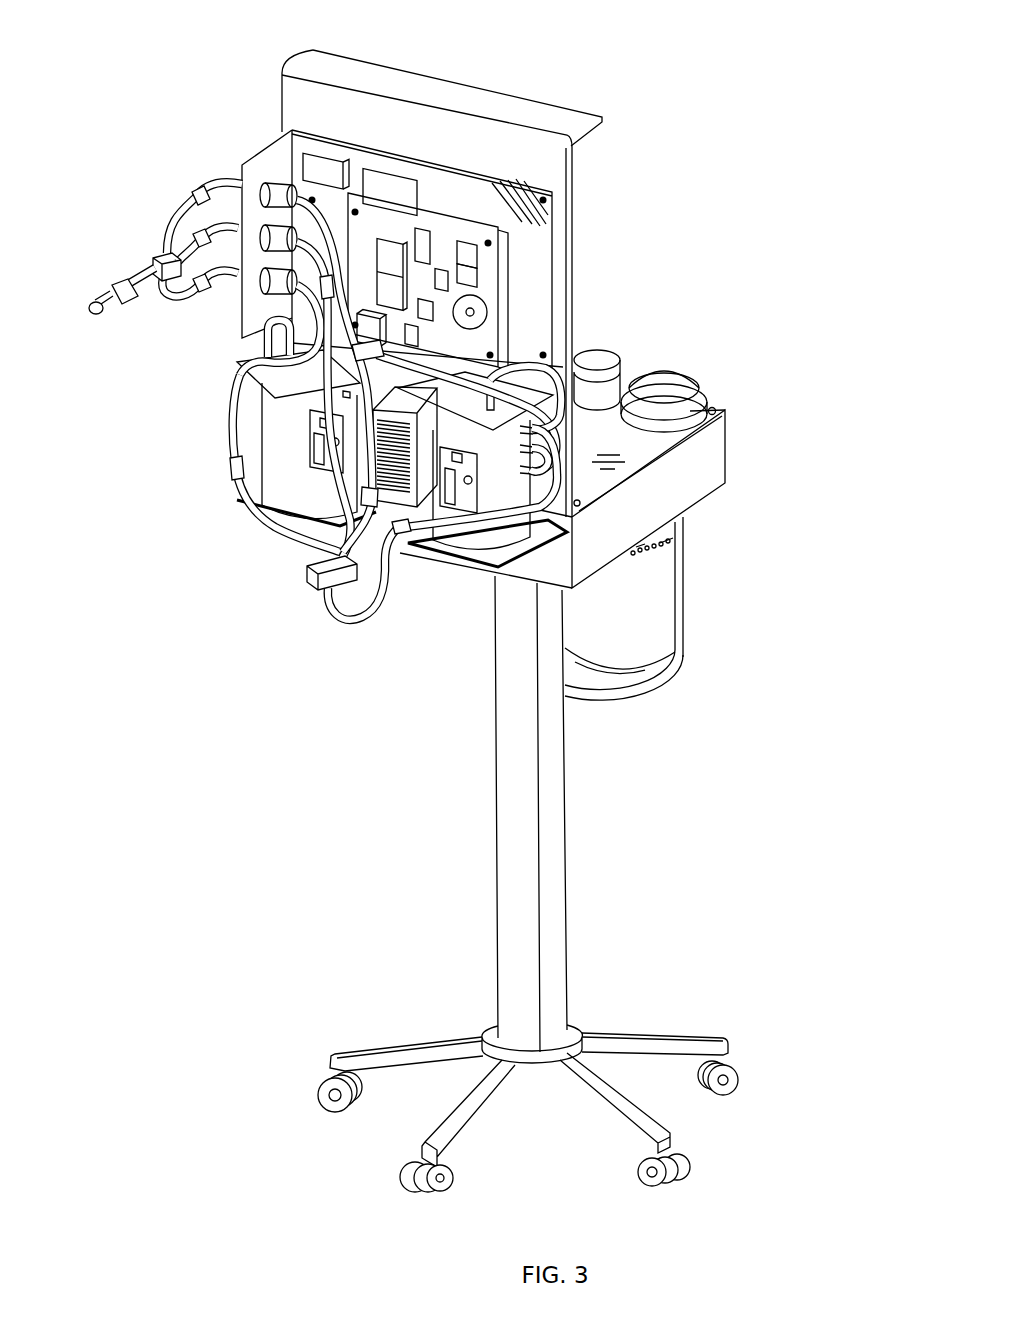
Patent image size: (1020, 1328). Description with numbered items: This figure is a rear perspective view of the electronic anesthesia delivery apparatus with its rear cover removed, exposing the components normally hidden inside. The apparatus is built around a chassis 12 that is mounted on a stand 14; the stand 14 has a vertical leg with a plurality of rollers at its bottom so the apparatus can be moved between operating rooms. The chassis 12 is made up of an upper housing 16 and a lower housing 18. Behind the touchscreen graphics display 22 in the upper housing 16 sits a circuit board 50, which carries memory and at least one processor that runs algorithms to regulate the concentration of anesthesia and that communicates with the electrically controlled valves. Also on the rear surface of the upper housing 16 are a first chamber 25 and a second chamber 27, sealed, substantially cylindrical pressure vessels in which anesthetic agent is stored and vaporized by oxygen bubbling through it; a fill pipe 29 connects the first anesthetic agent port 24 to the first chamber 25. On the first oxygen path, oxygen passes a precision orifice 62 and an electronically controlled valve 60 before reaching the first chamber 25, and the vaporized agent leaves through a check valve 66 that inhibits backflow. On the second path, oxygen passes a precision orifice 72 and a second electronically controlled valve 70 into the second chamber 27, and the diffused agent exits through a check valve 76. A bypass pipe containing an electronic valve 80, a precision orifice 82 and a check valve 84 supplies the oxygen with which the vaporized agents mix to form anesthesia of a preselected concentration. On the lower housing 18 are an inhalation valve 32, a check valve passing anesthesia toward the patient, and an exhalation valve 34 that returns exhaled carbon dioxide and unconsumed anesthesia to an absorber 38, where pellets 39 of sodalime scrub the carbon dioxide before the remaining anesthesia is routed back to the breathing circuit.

The chassis 12 is at (585, 90).
The stand 14 is at (566, 866).
The upper housing 16 is at (295, 110).
The lower housing 18 is at (655, 495).
The touchscreen graphics display 22 is at (540, 275).
The first anesthetic agent port 24 is at (583, 407).
The first chamber 25 is at (460, 540).
The second chamber 27 is at (293, 493).
The fill pipe 29 is at (537, 517).
The inhalation valve 32 is at (700, 386).
The exhalation valve 34 is at (603, 358).
The absorber 38 is at (687, 625).
The pellets 39 is at (655, 552).
The circuit board 50 is at (430, 210).
The electronically controlled valve 60 is at (270, 285).
The precision orifice 62 is at (198, 285).
The check valve 66 is at (402, 528).
The second electronically controlled valve 70 is at (270, 237).
The precision orifice 72 is at (200, 238).
The check valve 76 is at (236, 468).
The electronic valve 80 is at (275, 188).
The precision orifice 82 is at (200, 190).
The check valve 84 is at (323, 523).